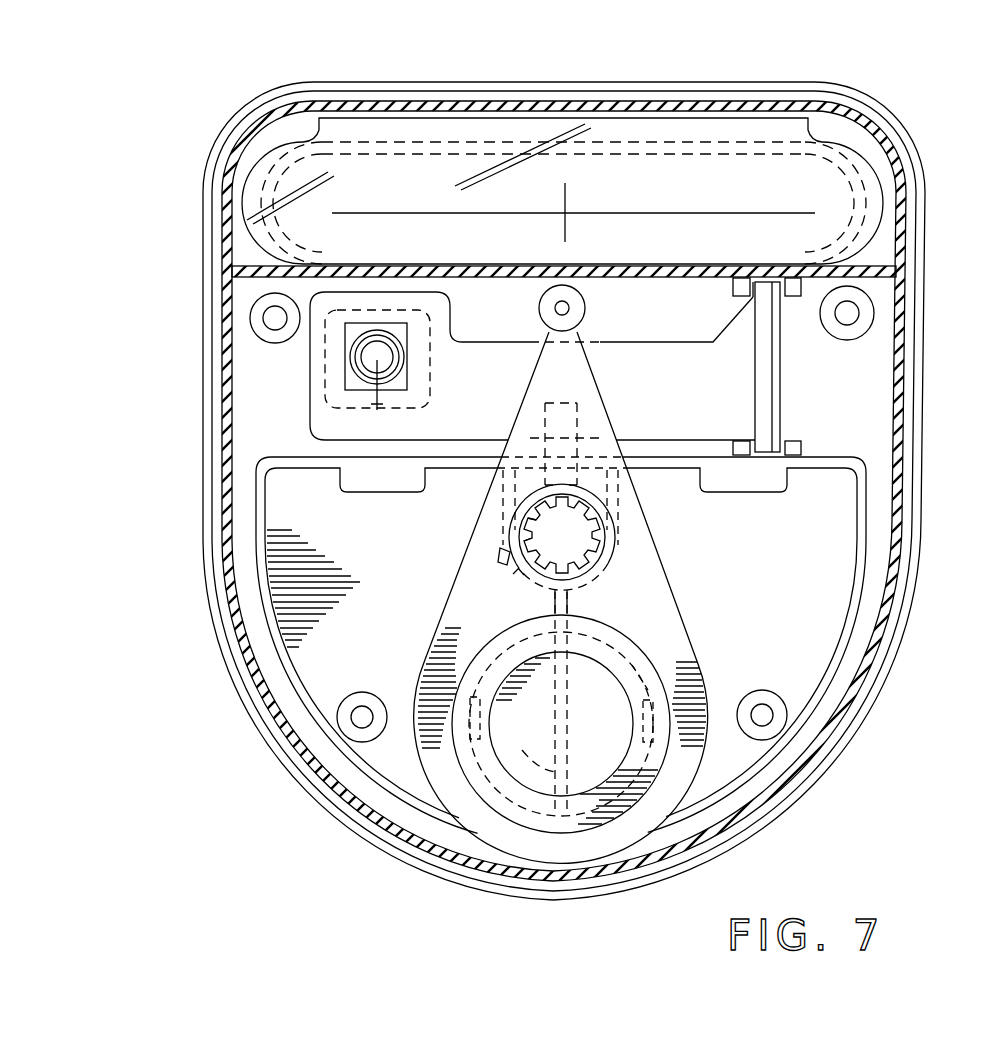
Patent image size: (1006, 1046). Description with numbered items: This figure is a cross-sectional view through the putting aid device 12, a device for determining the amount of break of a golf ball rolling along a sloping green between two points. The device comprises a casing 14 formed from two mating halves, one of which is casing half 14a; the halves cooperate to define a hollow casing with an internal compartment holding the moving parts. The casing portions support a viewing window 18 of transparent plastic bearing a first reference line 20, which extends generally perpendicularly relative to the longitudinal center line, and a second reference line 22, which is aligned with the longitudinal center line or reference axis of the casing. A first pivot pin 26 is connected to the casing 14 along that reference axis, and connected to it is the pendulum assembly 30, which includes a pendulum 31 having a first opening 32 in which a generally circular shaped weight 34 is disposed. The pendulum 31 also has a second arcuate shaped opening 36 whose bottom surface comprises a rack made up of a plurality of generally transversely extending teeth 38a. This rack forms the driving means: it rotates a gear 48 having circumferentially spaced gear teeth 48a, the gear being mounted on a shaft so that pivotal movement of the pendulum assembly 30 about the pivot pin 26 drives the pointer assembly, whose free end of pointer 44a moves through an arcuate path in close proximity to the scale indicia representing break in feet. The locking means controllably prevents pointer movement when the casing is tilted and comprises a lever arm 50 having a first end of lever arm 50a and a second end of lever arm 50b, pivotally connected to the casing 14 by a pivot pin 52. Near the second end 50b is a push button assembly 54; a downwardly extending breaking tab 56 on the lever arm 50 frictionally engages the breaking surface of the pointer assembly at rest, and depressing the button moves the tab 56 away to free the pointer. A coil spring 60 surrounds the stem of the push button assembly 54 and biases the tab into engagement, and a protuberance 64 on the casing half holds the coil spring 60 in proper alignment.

The putting aid device 12 is at (931, 187).
The casing 14 is at (878, 108).
The casing half 14a is at (387, 850).
The viewing window 18 is at (773, 183).
The first reference line 20 is at (460, 214).
The second reference line 22 is at (569, 183).
The first pivot pin 26 is at (545, 303).
The pendulum assembly 30 is at (605, 378).
The pendulum 31 is at (658, 577).
The first opening 32 is at (630, 665).
The weight 34 is at (602, 747).
The second arcuate shaped opening 36 is at (613, 537).
The teeth 38a is at (547, 577).
The free end of pointer 44a is at (530, 744).
The gear 48 is at (570, 547).
The gear teeth 48a is at (518, 540).
The lever arm 50 is at (636, 343).
The first end of lever arm 50a is at (742, 375).
The second end of lever arm 50b is at (308, 372).
The pivot pin 52 is at (783, 412).
The push button assembly 54 is at (405, 383).
The breaking tab 56 is at (580, 410).
The coil spring 60 is at (398, 360).
The protuberance 64 is at (370, 401).